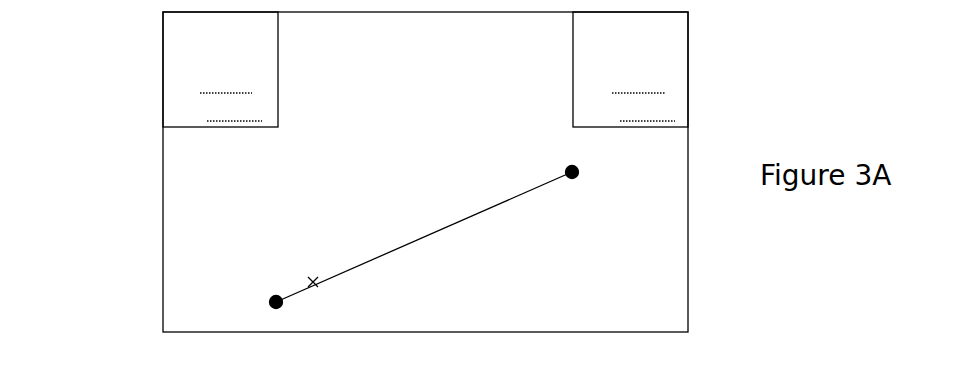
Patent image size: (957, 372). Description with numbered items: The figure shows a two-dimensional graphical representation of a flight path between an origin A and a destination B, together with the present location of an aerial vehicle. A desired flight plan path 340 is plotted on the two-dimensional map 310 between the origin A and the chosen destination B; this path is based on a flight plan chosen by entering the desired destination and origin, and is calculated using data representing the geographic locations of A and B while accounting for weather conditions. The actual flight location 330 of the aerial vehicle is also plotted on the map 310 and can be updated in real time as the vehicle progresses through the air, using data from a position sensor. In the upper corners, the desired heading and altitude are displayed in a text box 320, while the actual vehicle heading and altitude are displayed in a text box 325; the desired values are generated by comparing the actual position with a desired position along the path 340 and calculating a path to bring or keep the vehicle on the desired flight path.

The two-dimensional map 310 is at (125, 170).
The text box 320 is at (163, 72).
The text box 325 is at (688, 50).
The actual flight location 330 is at (310, 277).
The desired flight plan path 340 is at (477, 212).